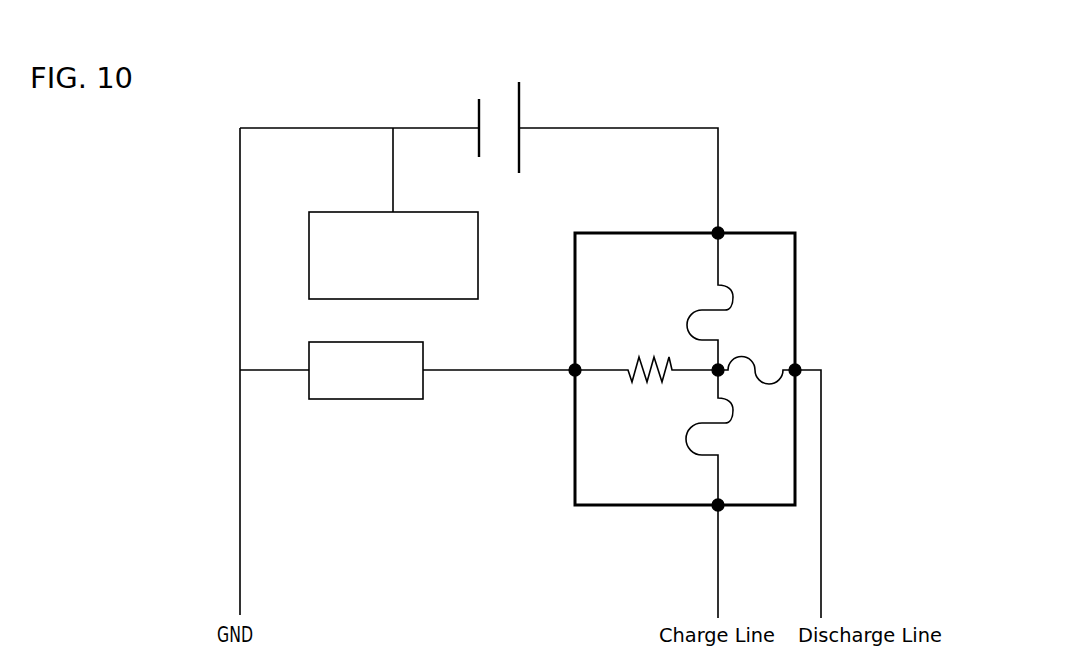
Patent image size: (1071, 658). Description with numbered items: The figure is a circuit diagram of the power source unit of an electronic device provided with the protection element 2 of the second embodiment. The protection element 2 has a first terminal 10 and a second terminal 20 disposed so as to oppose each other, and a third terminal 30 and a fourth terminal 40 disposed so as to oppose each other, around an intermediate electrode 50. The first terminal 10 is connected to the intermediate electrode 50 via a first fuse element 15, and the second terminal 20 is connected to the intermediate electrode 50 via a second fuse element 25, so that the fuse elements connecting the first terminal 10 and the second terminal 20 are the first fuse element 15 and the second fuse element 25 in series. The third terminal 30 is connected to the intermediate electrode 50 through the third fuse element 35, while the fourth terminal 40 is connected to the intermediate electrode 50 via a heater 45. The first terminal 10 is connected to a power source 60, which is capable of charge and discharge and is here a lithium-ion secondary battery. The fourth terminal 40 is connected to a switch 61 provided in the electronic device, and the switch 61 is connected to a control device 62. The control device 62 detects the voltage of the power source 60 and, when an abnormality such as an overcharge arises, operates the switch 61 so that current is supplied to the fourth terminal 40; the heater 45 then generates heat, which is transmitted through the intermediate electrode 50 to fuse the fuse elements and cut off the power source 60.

The protection element 2 is at (815, 230).
The first terminal 10 is at (723, 229).
The first fuse element 15 is at (731, 303).
The second terminal 20 is at (713, 510).
The second fuse element 25 is at (687, 443).
The third terminal 30 is at (800, 367).
The third fuse element 35 is at (770, 386).
The fourth terminal 40 is at (572, 375).
The heater 45 is at (647, 384).
The intermediate electrode 50 is at (725, 377).
The power source 60 is at (561, 100).
The switch 61 is at (358, 400).
The control device 62 is at (322, 211).